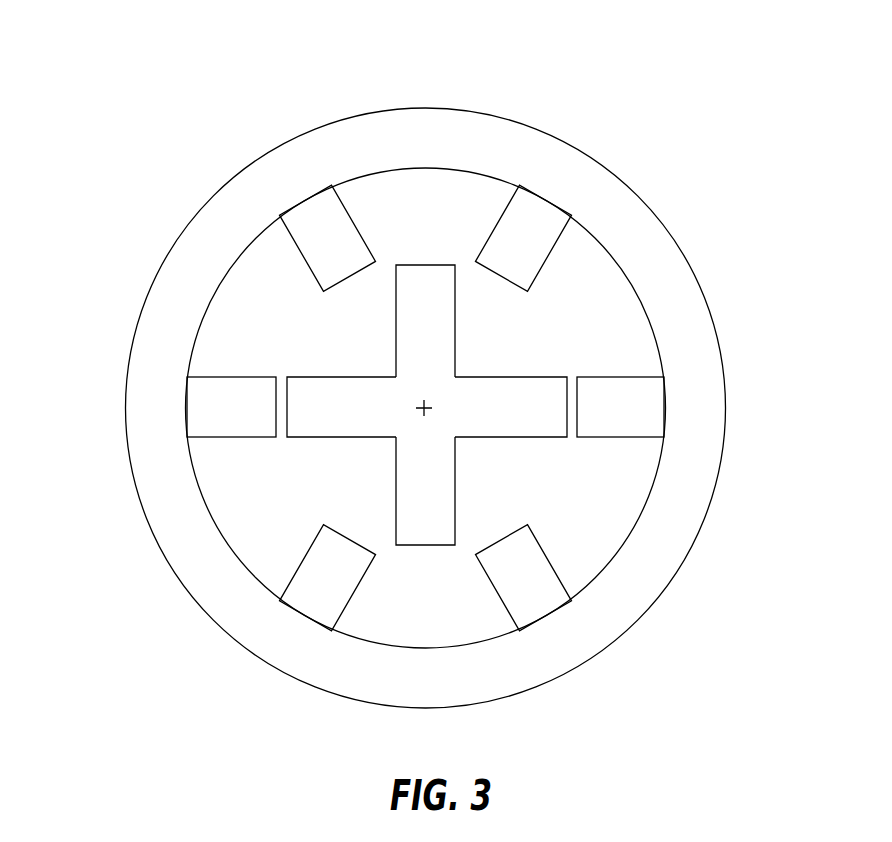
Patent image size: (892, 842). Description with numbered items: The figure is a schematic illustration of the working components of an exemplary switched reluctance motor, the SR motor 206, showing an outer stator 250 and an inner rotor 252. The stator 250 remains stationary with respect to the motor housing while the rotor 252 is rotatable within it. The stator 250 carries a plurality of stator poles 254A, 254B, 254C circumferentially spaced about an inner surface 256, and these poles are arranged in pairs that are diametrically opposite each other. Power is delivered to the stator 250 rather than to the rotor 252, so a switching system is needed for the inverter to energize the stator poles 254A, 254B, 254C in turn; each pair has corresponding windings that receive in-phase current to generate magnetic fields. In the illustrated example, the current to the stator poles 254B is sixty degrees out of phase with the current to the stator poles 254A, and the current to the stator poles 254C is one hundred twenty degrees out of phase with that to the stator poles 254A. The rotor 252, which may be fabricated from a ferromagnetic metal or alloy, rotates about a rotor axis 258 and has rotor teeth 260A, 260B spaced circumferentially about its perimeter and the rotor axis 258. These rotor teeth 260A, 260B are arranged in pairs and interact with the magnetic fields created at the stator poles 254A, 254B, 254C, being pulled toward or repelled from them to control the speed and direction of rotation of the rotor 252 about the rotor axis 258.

The SR motor 206 is at (180, 55).
The stator 250 is at (658, 267).
The rotor 252 is at (426, 393).
The stator poles 254A is at (230, 377).
The stator poles 254B is at (553, 248).
The stator poles 254C is at (358, 217).
The inner surface 256 is at (236, 542).
The rotor axis 258 is at (432, 412).
The rotor teeth 260A is at (541, 378).
The rotor teeth 260B is at (421, 275).